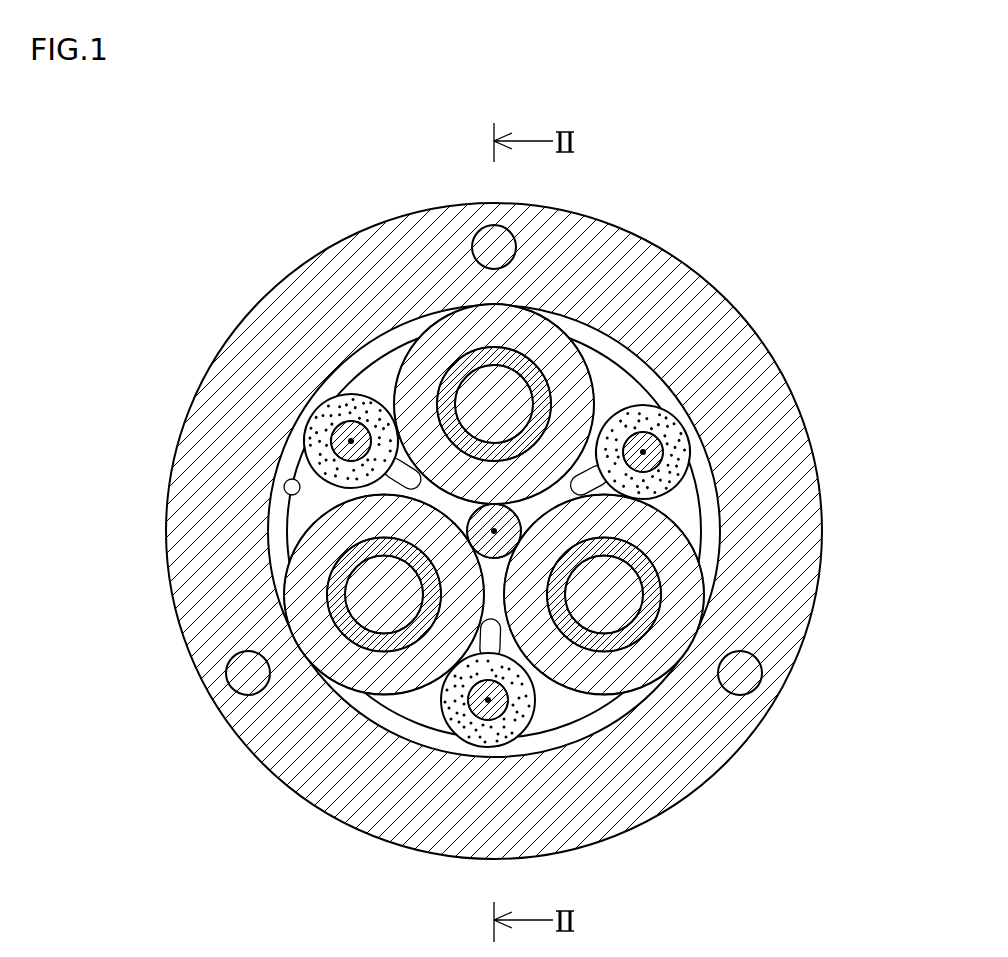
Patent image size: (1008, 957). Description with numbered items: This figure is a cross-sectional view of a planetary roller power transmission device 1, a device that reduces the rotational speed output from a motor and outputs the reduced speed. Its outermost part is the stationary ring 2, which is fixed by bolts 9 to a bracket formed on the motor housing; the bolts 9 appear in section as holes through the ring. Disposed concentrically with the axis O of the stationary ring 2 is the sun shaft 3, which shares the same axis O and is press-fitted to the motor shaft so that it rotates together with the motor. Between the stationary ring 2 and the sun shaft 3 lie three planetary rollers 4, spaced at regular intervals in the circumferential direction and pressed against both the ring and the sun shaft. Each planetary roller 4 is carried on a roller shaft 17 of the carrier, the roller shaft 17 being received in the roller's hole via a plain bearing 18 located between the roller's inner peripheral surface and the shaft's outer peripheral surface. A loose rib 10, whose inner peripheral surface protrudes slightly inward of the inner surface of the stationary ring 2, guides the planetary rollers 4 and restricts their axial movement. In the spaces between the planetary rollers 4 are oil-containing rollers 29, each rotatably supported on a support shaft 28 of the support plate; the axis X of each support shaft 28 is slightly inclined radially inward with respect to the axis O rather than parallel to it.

The planetary roller power transmission device 1 is at (714, 229).
The stationary ring 2 is at (628, 255).
The sun shaft 3 is at (485, 522).
The planetary roller 4 is at (438, 342).
The bolt 9 is at (480, 243).
The loose rib 10 is at (283, 477).
The roller shaft 17 is at (607, 617).
The plain bearing 18 is at (653, 603).
The support shaft 28 is at (340, 445).
The oil-containing roller 29 is at (350, 440).
The axis of support shaft X is at (327, 410).
The axis of stationary ring O is at (500, 540).